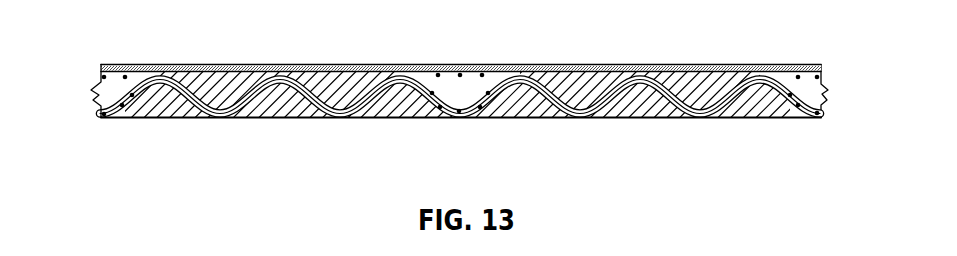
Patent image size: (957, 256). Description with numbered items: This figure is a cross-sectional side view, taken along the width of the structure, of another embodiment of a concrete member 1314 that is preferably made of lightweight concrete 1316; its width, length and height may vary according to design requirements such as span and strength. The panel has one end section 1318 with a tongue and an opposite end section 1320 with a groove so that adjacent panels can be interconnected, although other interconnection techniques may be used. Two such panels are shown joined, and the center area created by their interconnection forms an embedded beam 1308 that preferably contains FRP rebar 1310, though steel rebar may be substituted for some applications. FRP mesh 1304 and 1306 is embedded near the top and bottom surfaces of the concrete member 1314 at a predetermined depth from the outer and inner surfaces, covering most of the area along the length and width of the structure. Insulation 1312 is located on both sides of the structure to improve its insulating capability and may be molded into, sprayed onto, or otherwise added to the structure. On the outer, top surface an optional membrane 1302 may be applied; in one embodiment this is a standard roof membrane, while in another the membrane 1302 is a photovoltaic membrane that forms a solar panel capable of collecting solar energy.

The membrane 1302 is at (342, 67).
The FRP mesh 1304 is at (325, 115).
The FRP mesh 1306 is at (348, 115).
The embedded beam 1308 is at (463, 100).
The FRP rebar 1310 is at (490, 93).
The insulation 1312 is at (752, 97).
The concrete member 1314 is at (788, 86).
The lightweight concrete 1316 is at (138, 82).
The end section 1318 is at (100, 98).
The end section 1320 is at (809, 94).